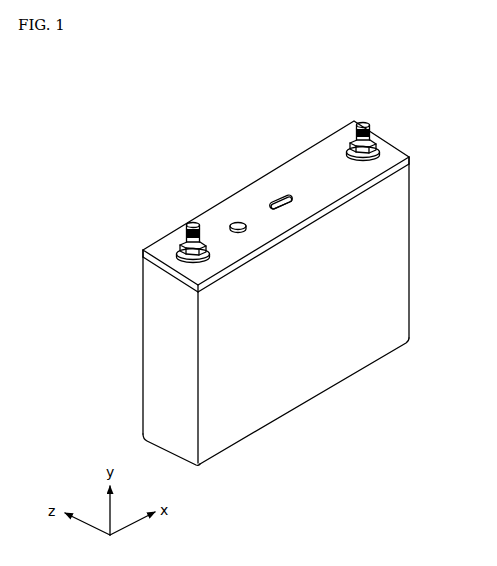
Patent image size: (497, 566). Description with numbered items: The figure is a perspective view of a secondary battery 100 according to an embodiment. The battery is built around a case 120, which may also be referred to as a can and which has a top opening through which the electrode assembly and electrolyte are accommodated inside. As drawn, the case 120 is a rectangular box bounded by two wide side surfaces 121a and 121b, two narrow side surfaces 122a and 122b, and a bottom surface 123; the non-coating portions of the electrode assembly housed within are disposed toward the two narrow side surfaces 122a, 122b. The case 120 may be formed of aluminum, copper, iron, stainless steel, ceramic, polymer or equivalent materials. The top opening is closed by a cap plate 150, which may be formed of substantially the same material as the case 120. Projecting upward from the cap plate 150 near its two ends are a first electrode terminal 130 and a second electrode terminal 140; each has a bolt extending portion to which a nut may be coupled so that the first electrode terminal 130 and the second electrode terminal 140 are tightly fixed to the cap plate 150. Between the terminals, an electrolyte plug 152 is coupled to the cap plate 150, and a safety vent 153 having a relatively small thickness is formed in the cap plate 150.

The secondary battery 100 is at (192, 121).
The case 120 is at (412, 280).
The wide side surface 121a is at (210, 331).
The wide side surface 121b is at (142, 291).
The narrow side surface 122a is at (158, 391).
The narrow side surface 122b is at (410, 200).
The bottom surface 123 is at (305, 403).
The first electrode terminal 130 is at (185, 222).
The second electrode terminal 140 is at (373, 121).
The cap plate 150 is at (313, 160).
The electrolyte plug 152 is at (236, 223).
The safety vent 153 is at (279, 199).